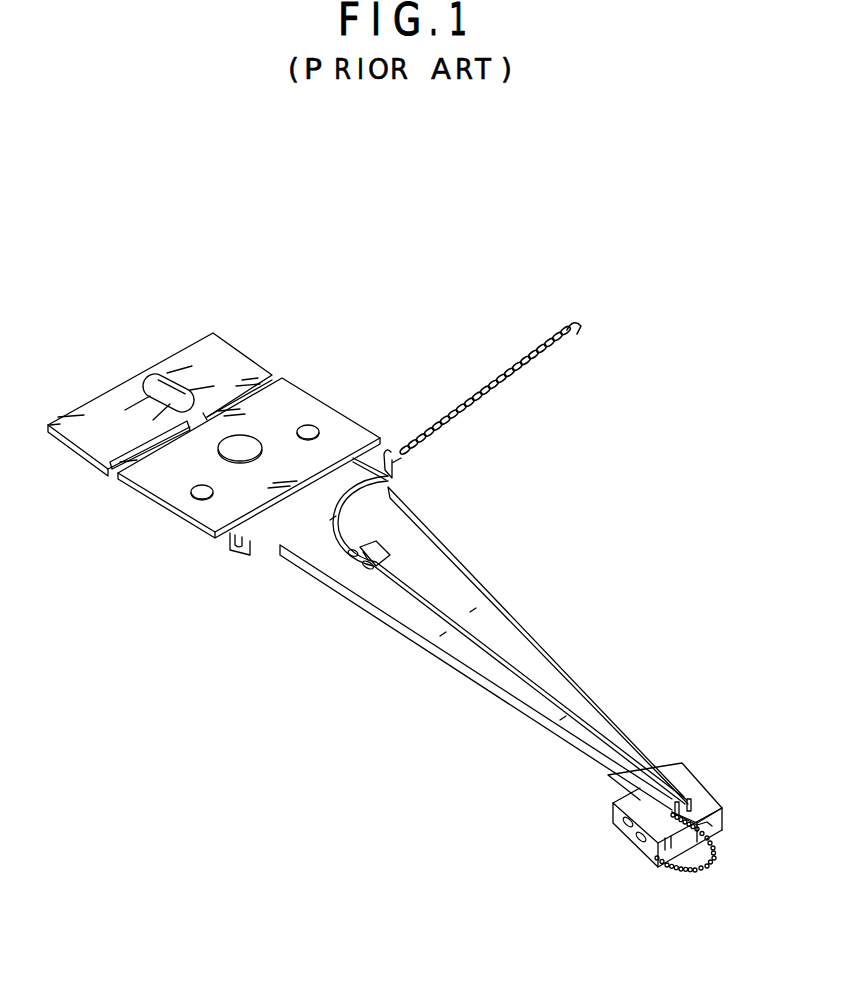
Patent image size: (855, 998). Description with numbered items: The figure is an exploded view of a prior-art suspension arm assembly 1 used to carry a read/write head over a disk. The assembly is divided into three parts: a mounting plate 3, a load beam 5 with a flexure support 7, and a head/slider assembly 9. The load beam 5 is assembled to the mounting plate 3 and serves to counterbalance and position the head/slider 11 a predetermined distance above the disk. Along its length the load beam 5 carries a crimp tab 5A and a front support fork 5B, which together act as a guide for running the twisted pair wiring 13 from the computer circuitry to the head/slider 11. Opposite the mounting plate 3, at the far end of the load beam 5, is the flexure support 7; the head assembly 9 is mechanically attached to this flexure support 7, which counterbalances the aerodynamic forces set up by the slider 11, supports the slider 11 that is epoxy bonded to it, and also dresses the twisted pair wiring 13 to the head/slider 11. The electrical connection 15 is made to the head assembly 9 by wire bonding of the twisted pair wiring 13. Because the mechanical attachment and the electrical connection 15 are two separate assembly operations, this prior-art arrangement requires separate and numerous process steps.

The suspension arm assembly 1 is at (205, 342).
The mounting plate 3 is at (308, 402).
The load beam 5 is at (347, 603).
The crimp tab 5A is at (370, 547).
The front support fork 5B is at (673, 815).
The flexure support 7 is at (707, 822).
The head assembly 9 is at (656, 802).
The head/slider 11 is at (695, 792).
The twisted pair wiring 13 is at (707, 857).
The electrical connection 15 is at (622, 833).